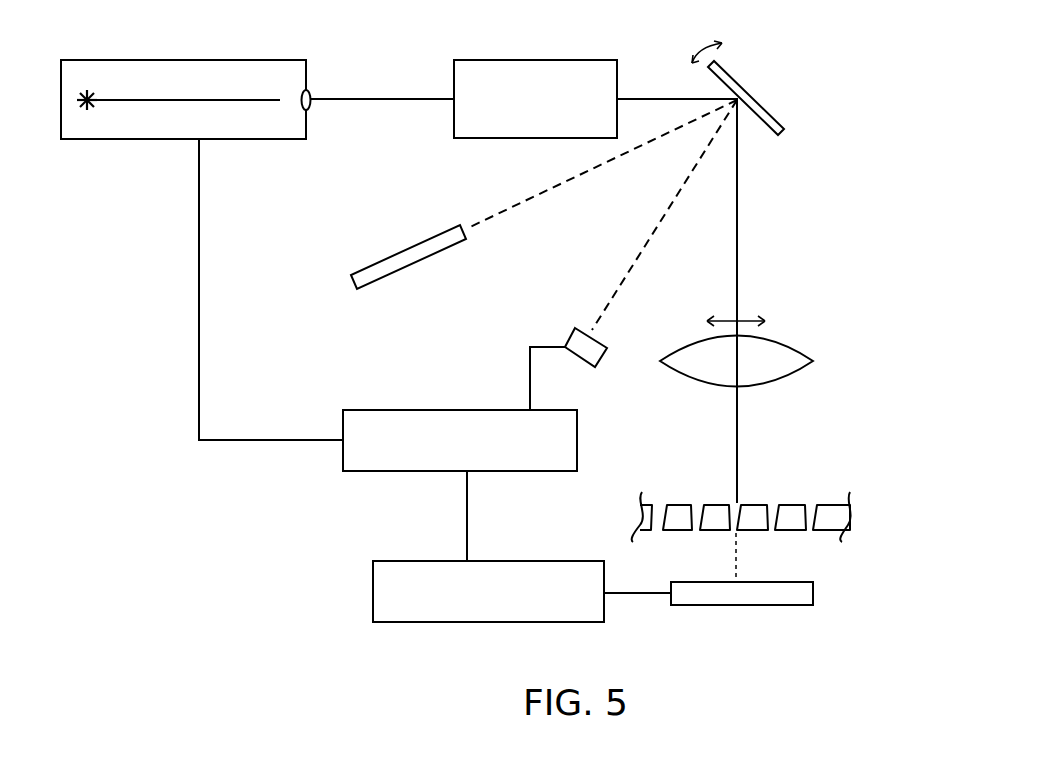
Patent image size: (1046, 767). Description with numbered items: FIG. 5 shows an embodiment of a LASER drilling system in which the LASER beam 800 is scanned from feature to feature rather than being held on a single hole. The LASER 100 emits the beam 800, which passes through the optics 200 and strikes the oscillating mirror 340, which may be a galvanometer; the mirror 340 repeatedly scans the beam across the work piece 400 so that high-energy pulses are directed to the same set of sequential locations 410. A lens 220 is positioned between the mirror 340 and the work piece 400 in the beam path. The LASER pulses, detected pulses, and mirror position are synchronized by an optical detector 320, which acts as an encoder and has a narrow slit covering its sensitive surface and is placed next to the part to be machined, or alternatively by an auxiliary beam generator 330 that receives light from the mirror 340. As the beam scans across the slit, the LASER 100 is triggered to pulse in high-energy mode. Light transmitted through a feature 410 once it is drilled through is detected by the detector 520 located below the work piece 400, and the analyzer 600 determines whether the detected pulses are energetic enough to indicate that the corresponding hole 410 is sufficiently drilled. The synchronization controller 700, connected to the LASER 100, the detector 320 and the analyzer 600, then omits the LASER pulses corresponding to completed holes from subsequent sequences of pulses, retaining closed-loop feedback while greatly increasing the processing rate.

The LASER 100 is at (113, 140).
The LASER beam 800 is at (371, 99).
The optics 200 is at (453, 124).
The oscillating mirror 340 is at (730, 75).
The auxiliary beam generator 330 is at (351, 277).
The optical detector 320 is at (575, 330).
The synchronization controller 700 is at (353, 410).
The analyzer 600 is at (373, 590).
The lens 220 is at (800, 372).
The wafer 400 is at (793, 486).
The feature 410 is at (812, 503).
The detector 520 is at (768, 606).